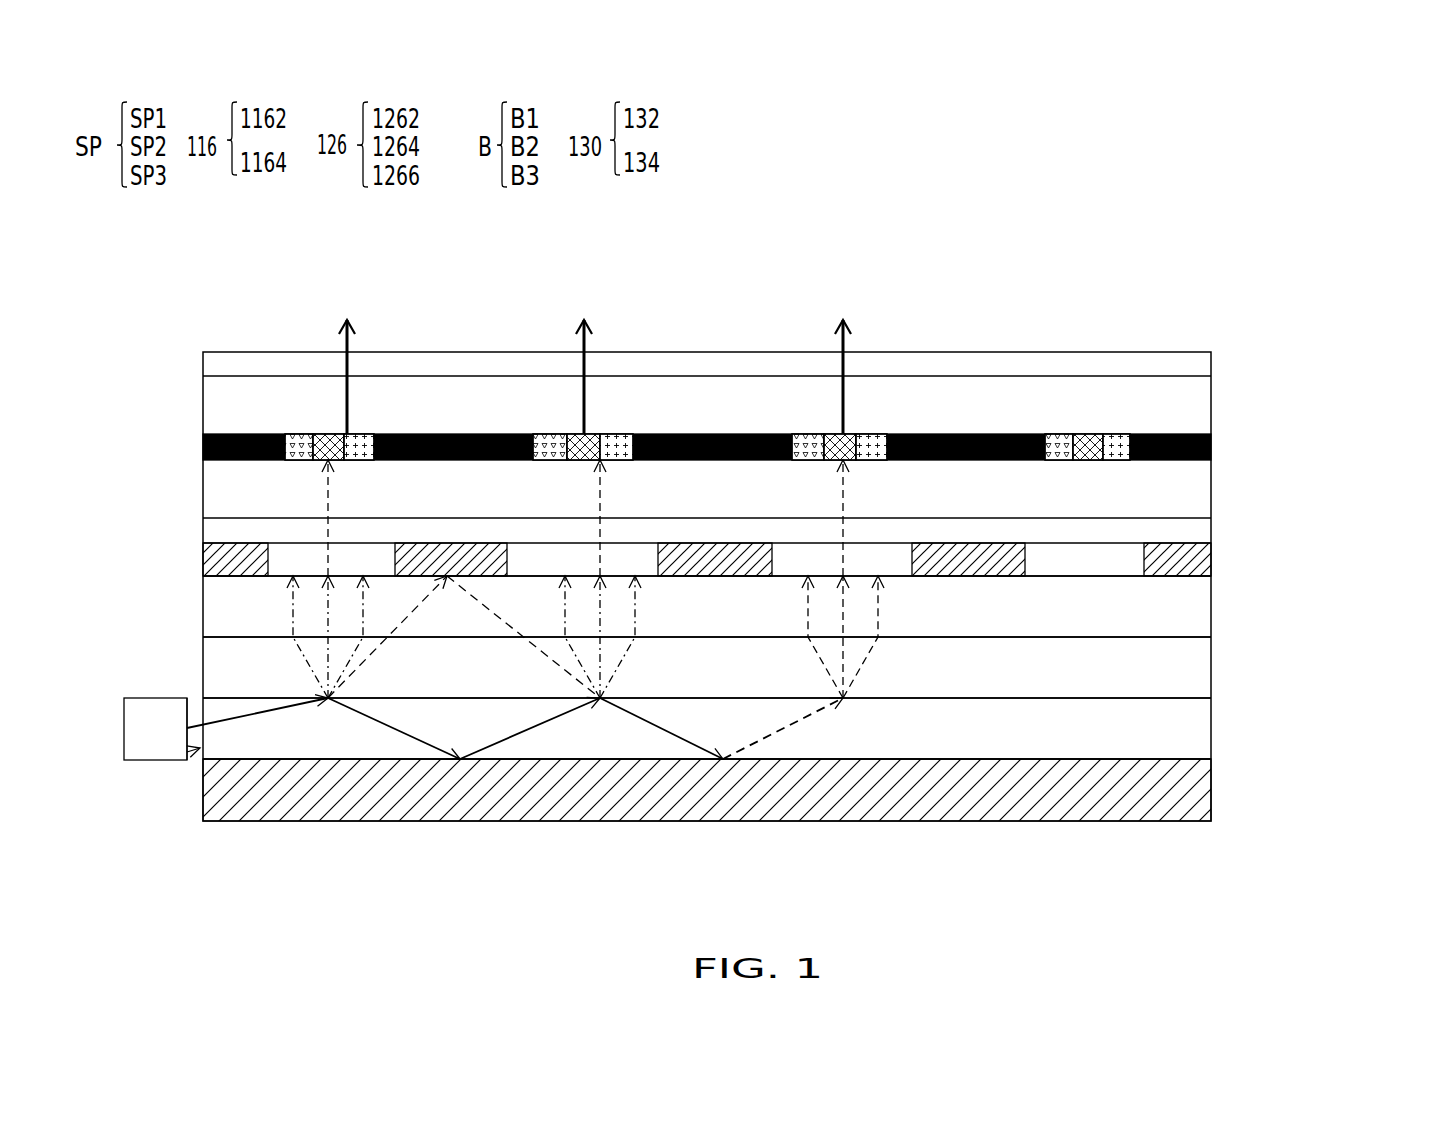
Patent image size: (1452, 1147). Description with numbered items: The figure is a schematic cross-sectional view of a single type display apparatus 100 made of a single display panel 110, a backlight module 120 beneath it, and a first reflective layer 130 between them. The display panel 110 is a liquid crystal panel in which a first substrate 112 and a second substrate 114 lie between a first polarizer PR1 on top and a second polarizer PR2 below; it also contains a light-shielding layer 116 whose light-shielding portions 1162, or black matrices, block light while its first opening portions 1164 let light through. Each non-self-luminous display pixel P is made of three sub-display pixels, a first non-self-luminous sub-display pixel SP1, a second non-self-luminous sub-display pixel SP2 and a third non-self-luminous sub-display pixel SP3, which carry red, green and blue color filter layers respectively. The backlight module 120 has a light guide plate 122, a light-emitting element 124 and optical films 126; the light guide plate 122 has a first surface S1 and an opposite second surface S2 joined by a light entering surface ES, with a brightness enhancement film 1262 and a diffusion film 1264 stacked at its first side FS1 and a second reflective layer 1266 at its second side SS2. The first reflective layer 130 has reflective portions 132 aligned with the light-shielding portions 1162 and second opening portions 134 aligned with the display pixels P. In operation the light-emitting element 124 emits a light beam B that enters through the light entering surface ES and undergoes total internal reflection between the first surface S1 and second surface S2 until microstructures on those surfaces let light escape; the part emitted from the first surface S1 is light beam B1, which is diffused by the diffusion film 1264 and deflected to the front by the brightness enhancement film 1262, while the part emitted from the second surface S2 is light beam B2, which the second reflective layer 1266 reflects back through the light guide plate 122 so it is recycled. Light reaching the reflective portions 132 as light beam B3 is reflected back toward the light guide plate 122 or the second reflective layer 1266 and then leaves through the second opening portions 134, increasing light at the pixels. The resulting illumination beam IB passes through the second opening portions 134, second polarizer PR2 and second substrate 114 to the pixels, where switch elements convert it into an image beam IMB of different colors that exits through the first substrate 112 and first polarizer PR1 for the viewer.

The display apparatus 100 is at (1357, 916).
The display panel 110 is at (115, 353).
The first substrate 112 is at (203, 400).
The second substrate 114 is at (203, 488).
The light-shielding layer 116 is at (707, 335).
The light-shielding portions 1162 is at (496, 434).
The first opening portions 1164 is at (696, 357).
The first polarizer PR1 is at (203, 362).
The second polarizer PR2 is at (205, 537).
The first non-self-luminous sub-display pixel SP1 is at (300, 440).
The second non-self-luminous sub-display pixel SP2 is at (330, 440).
The third non-self-luminous sub-display pixel SP3 is at (358, 436).
The non-self-luminous display pixel P is at (410, 253).
The backlight module 120 is at (115, 577).
The light guide plate 122 is at (1195, 733).
The light-emitting element 124 is at (163, 740).
The optical films 126 is at (820, 707).
The brightness enhancement film 1262 is at (1195, 608).
The diffusion film 1264 is at (1195, 653).
The second reflective layer 1266 is at (1195, 807).
The first reflective layer 130 is at (743, 544).
The reflective portions 132 is at (1203, 561).
The second opening portions 134 is at (1132, 563).
The first surface S1 is at (1162, 695).
The second surface S2 is at (1164, 763).
The first side FS1 is at (1350, 652).
The second side SS2 is at (1349, 779).
The light entering surface ES is at (181, 762).
The light beam B is at (256, 716).
The light beam emitted from the first surface B1 is at (283, 592).
The light beam emitted from the second surface B2 is at (783, 730).
The light beam reaching the reflective portions B3 is at (493, 618).
The illumination beam IB is at (326, 495).
The image beam IMB is at (338, 437).